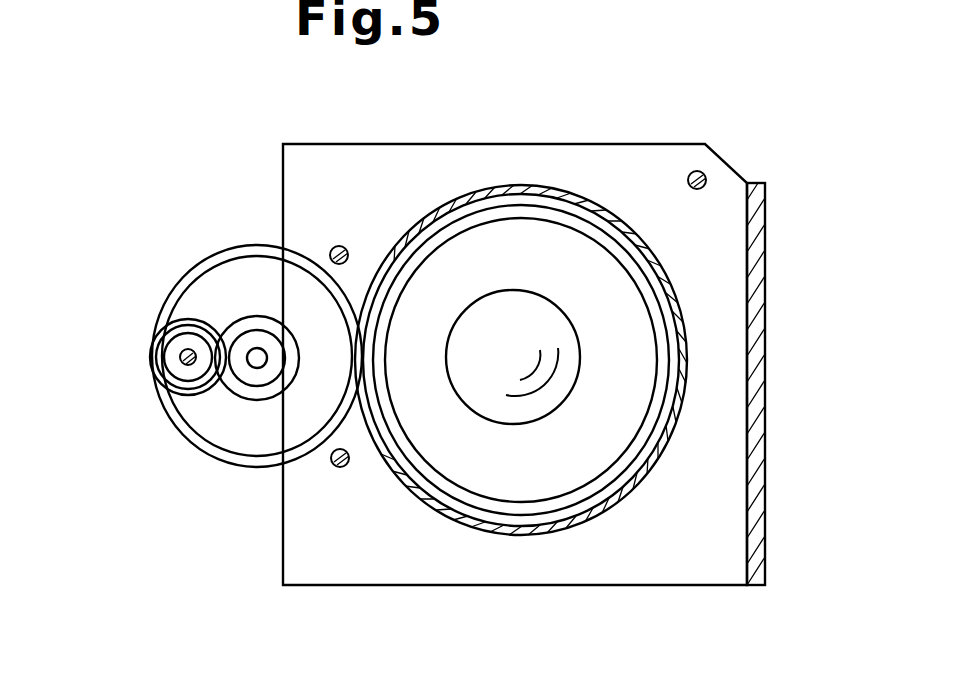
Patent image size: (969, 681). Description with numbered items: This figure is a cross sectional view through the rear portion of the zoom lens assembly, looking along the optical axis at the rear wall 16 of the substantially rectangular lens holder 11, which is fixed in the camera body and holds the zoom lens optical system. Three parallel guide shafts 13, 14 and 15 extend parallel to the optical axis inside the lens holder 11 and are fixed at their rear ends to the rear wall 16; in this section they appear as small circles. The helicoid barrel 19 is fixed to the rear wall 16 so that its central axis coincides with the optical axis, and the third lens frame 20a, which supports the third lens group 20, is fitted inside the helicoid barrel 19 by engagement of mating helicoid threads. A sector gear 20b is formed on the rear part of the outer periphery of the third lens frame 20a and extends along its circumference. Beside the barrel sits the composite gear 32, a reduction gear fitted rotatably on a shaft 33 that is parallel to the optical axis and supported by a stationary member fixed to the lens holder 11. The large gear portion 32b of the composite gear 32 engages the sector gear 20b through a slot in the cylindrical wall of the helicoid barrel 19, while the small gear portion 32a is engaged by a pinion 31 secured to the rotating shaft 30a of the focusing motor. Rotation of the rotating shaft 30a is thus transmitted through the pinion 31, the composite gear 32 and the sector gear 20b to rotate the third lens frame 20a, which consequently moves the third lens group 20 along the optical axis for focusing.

The lens holder 11 is at (753, 248).
The guide shaft 13 is at (703, 172).
The guide shaft 14 is at (341, 468).
The guide shaft 15 is at (348, 247).
The rear wall 16 is at (622, 162).
The helicoid barrel 19 is at (688, 357).
The third lens group 20 is at (595, 416).
The third lens frame 20a is at (577, 453).
The sector gear 20b is at (485, 503).
The rotating shaft 30a is at (183, 354).
The pinion 31 is at (156, 385).
The composite gear 32 is at (215, 365).
The small gear portion 32a is at (225, 392).
The large gear portion 32b is at (197, 297).
The shaft 33 is at (256, 357).